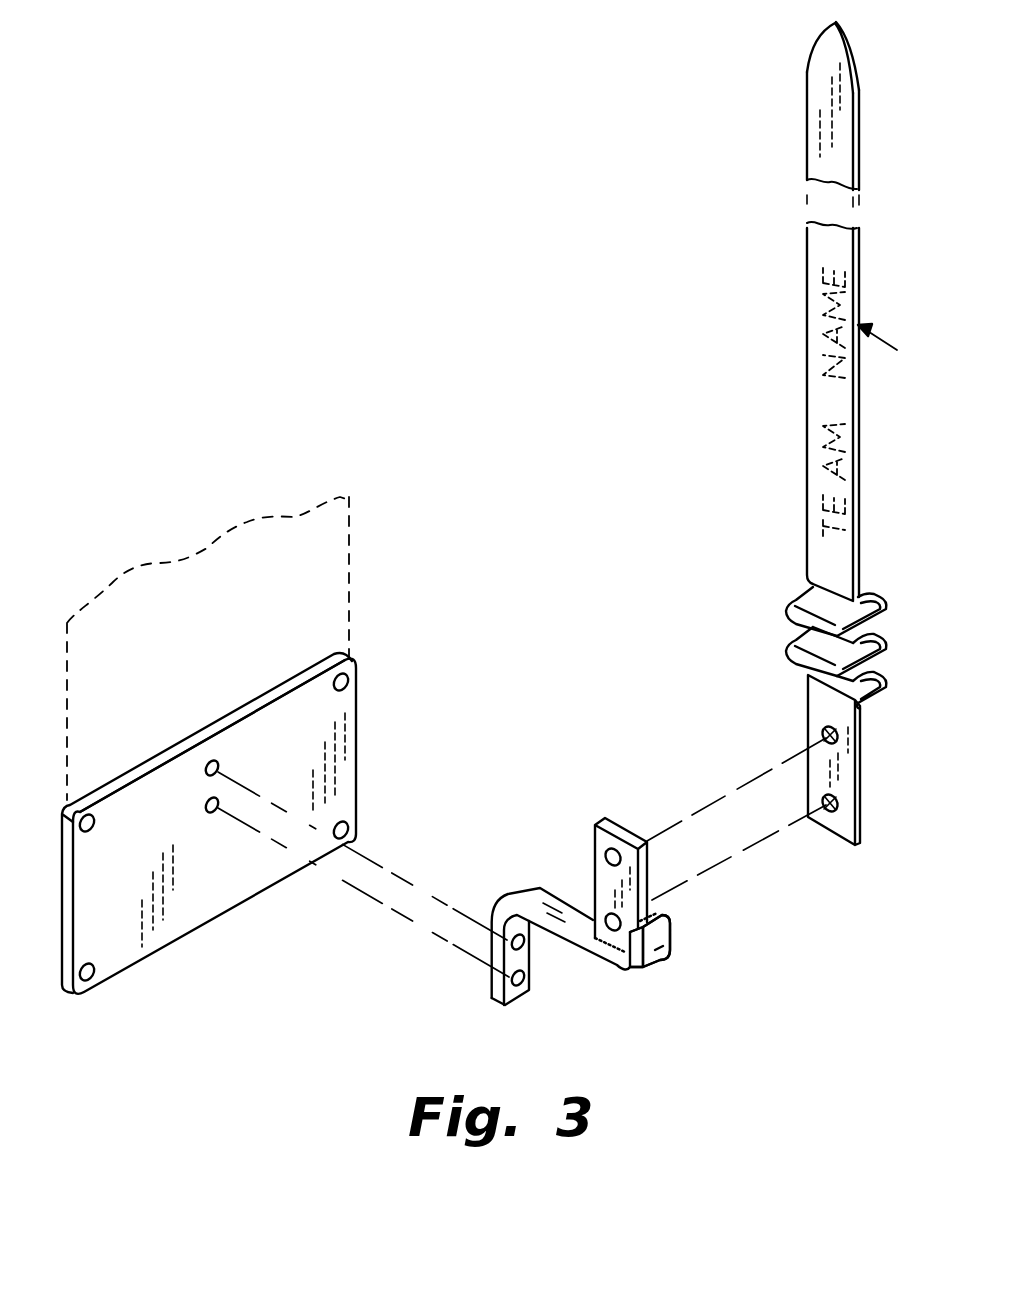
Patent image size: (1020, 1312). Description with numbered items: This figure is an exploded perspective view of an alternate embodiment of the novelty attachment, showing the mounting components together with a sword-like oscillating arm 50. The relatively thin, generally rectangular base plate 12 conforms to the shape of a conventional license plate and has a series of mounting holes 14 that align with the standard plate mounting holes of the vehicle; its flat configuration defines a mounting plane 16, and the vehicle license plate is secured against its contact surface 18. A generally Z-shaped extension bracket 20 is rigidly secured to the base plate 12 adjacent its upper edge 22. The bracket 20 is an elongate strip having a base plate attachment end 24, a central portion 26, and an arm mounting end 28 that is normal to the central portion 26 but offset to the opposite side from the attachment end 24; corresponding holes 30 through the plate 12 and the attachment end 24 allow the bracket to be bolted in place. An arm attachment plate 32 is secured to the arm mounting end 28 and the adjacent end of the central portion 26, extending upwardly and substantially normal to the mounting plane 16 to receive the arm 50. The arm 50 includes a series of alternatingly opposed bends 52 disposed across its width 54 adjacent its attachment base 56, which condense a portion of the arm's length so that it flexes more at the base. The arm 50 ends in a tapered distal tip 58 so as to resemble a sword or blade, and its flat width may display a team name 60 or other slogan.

The base plate 12 is at (242, 863).
The mounting holes 14 is at (345, 823).
The mounting or attachment plane 16 is at (350, 556).
The license plate attachment or contact surface 18 is at (245, 872).
The extension bracket 20 is at (583, 927).
The upper edge 22 is at (204, 735).
The base plate attachment end 24 is at (497, 970).
The central portion 26 is at (600, 963).
The arm mounting end 28 is at (667, 935).
The holes 30 is at (205, 805).
The arm attachment plate 32 is at (622, 828).
The arm 50 is at (759, 462).
The bends 52 is at (782, 649).
The width 54 is at (779, 311).
The attachment base 56 is at (837, 836).
The tapered distal tip 58 is at (817, 41).
The team name 60 is at (807, 295).